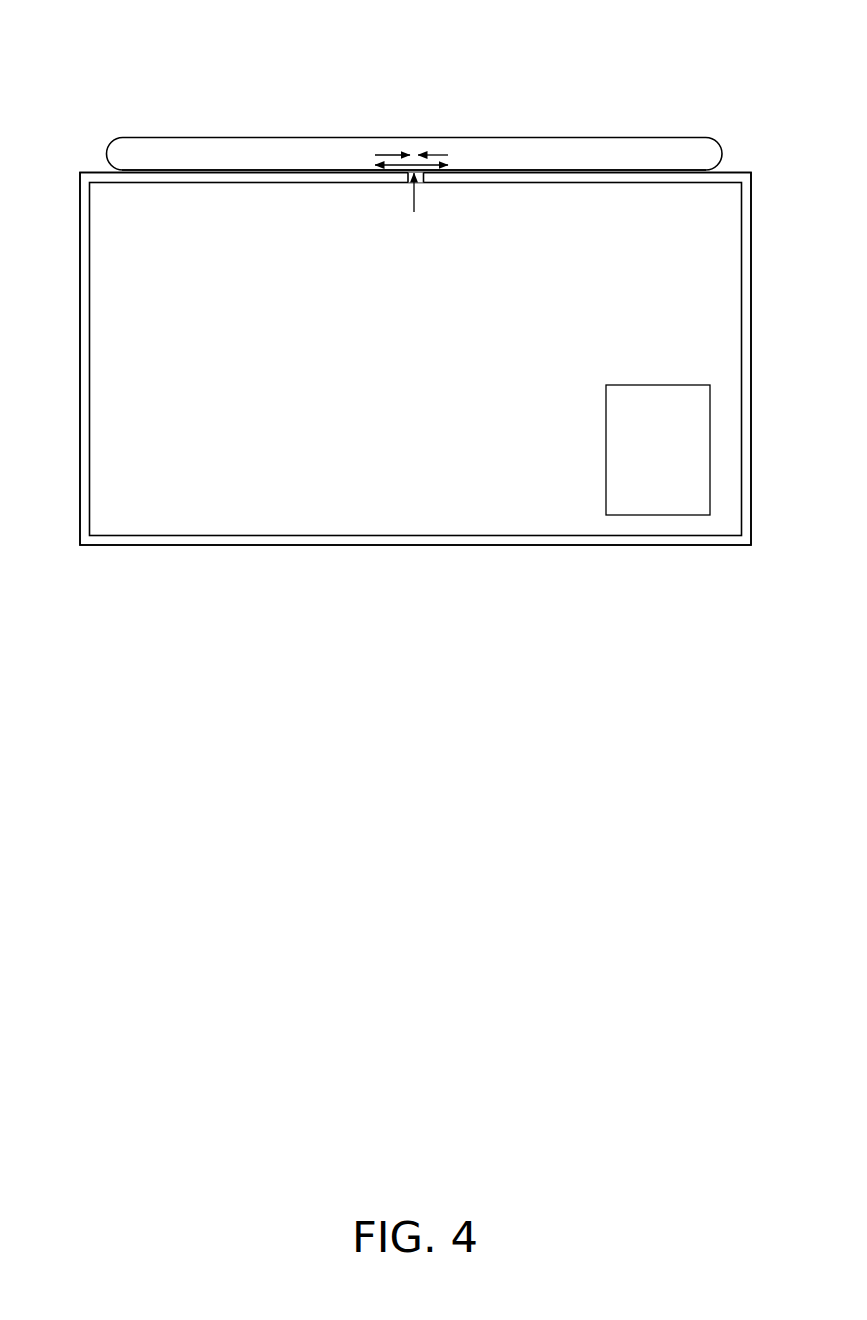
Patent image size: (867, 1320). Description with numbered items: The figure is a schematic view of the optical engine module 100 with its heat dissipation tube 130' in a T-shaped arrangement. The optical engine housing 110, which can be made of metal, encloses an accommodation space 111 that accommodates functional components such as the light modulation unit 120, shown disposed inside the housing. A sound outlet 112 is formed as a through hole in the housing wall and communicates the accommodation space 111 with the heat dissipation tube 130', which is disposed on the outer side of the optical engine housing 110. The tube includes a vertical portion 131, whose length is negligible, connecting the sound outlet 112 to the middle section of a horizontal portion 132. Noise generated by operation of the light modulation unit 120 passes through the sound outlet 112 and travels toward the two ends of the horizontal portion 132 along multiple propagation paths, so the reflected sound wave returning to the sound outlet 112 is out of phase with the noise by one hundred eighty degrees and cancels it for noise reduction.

The optical engine module 100 is at (98, 45).
The optical engine housing 110 is at (83, 293).
The accommodation space 111 is at (110, 385).
The sound outlet 112 is at (411, 186).
The light modulation unit 120 is at (679, 466).
The heat dissipation tube 130' is at (415, 105).
The vertical portion 131 is at (430, 174).
The horizontal portion 132 is at (395, 147).